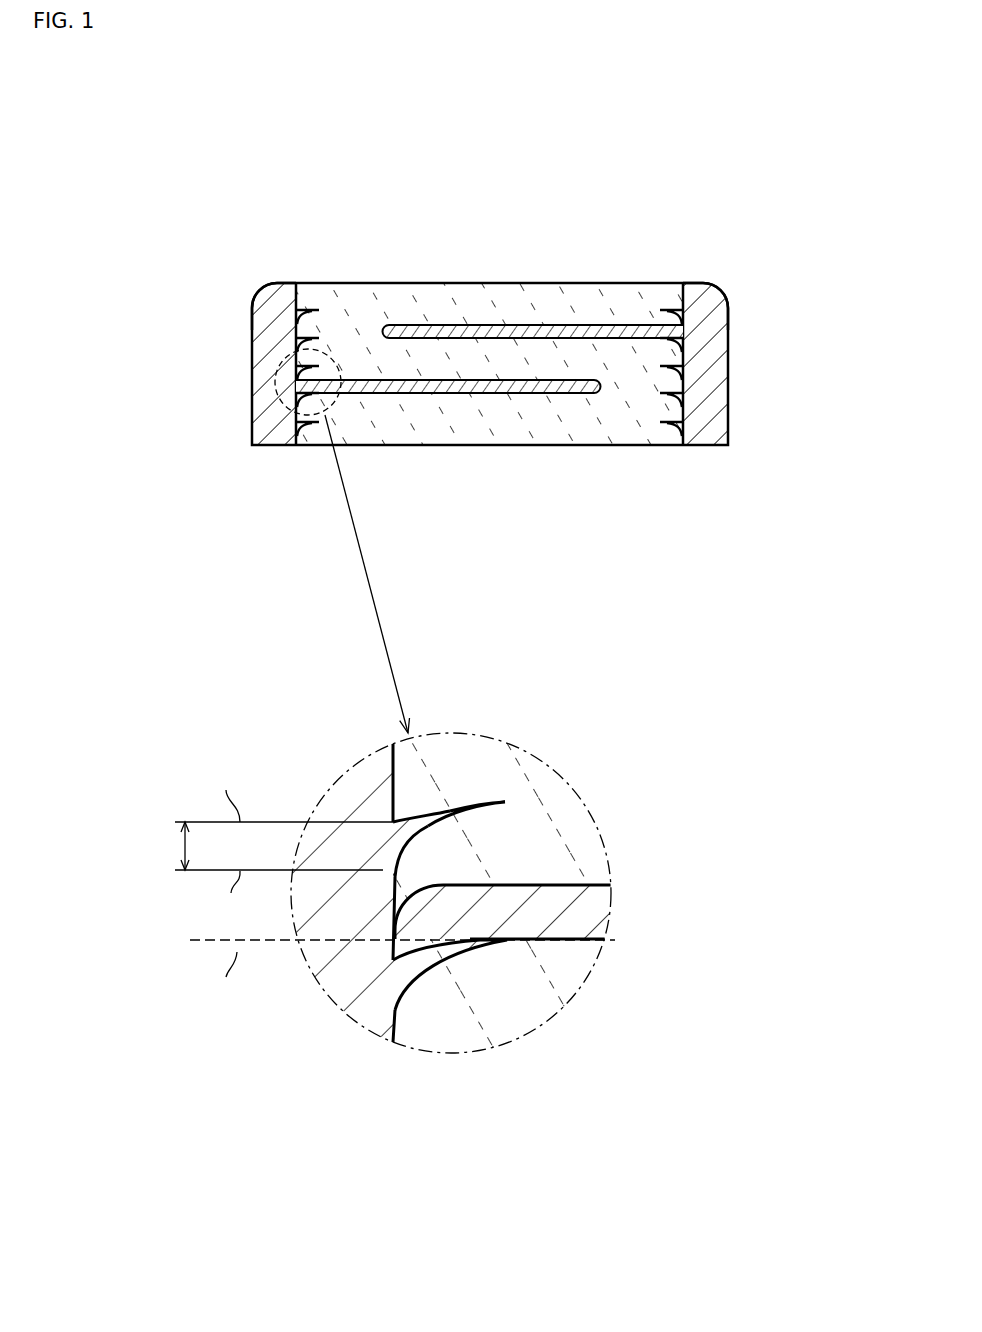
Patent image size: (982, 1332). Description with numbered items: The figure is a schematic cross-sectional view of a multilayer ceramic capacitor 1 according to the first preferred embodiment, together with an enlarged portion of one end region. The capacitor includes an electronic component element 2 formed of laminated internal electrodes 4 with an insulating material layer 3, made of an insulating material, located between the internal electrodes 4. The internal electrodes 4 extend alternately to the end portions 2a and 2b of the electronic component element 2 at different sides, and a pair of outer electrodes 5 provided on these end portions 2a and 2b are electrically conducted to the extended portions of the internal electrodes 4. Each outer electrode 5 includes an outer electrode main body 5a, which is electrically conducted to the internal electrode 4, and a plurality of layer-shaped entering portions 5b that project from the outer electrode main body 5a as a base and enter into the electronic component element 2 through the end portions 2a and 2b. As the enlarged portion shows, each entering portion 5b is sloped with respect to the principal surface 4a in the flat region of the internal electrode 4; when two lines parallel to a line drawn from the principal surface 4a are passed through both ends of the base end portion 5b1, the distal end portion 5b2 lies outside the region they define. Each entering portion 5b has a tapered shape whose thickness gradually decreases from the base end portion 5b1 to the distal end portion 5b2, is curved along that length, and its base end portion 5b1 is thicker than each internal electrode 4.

The multilayer ceramic capacitor 1 is at (194, 145).
The electronic component element 2 is at (489, 646).
The end portion 2a is at (296, 383).
The end portion 2b is at (700, 336).
The insulating material layer 3 is at (505, 300).
The internal electrode 4 is at (493, 594).
The principal surface 4a is at (568, 323).
The outer electrode 5 is at (486, 661).
The outer electrode main body 5a is at (285, 290).
The entering portion 5b is at (489, 661).
The base end portion 5b1 is at (397, 833).
The distal end portion 5b2 is at (505, 802).